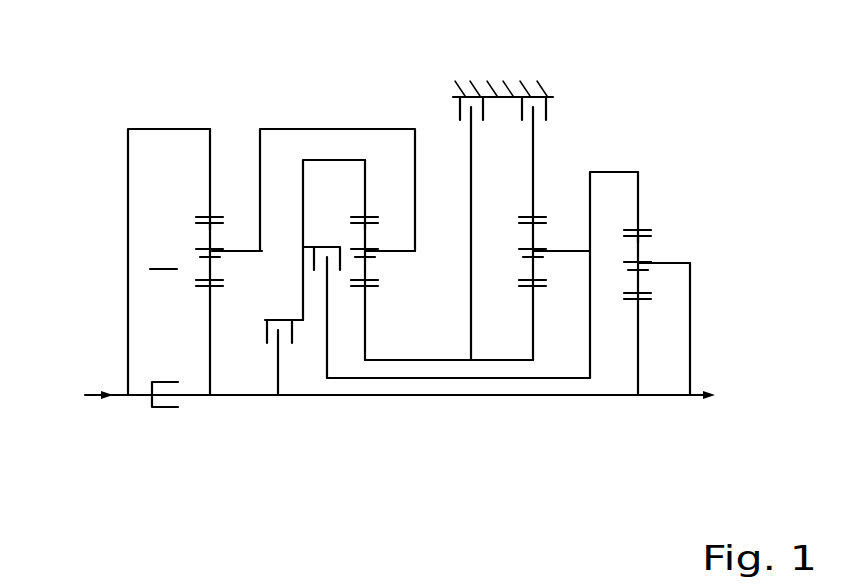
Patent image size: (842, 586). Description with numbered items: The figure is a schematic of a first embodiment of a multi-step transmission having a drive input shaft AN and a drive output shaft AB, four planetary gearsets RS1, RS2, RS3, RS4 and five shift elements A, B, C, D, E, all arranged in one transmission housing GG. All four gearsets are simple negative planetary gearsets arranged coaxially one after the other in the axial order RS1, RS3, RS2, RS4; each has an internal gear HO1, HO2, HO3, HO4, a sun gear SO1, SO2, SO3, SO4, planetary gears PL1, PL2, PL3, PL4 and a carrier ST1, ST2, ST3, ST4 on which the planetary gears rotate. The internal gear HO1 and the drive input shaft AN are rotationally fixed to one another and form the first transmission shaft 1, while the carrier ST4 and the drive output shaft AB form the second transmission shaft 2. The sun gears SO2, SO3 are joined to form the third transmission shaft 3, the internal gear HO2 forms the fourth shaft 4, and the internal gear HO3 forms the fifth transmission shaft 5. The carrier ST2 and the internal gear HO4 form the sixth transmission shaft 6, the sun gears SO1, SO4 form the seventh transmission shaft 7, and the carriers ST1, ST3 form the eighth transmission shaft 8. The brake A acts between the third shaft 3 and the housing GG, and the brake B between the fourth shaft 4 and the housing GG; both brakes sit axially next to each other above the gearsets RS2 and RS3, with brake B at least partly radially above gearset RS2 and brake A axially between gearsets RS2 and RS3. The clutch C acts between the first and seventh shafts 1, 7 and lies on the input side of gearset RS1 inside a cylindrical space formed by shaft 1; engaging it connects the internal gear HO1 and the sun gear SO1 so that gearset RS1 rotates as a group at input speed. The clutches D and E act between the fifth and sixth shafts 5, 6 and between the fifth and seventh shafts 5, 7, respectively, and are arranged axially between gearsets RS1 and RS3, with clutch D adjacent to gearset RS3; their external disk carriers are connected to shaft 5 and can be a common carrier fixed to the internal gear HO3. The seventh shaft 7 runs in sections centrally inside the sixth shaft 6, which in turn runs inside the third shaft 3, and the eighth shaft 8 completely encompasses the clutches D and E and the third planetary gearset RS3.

The first transmission shaft 1 is at (165, 128).
The second transmission shaft 2 is at (690, 368).
The third transmission shaft 3 is at (470, 168).
The fourth transmission shaft 4 is at (535, 182).
The fifth transmission shaft 5 is at (303, 197).
The sixth transmission shaft 6 is at (603, 172).
The seventh transmission shaft 7 is at (152, 490).
The eighth transmission shaft 8 is at (288, 128).
The internal gear of the first planetary gearset HO1 is at (212, 180).
The carrier of the first planetary gearset ST1 is at (252, 250).
The planetary gears of the first planetary gearset PL1 is at (197, 233).
The first planetary gearset RS1 is at (193, 255).
The sun gear of the first planetary gearset SO1 is at (208, 308).
The internal gear of the second planetary gearset HO2 is at (535, 162).
The carrier of the second planetary gearset ST2 is at (533, 252).
The planetary gears of the second planetary gearset PL2 is at (527, 233).
The second planetary gearset RS2 is at (510, 258).
The sun gear of the second planetary gearset SO2 is at (533, 323).
The internal gear of the third planetary gearset HO3 is at (367, 183).
The carrier of the third planetary gearset ST3 is at (395, 252).
The planetary gears of the third planetary gearset PL3 is at (370, 237).
The third planetary gearset RS3 is at (378, 268).
The sun gear of the third planetary gearset SO3 is at (364, 310).
The internal gear of the fourth planetary gearset HO4 is at (638, 193).
The carrier of the fourth planetary gearset ST4 is at (672, 264).
The planetary gears of the fourth planetary gearset PL4 is at (640, 256).
The fourth planetary gearset RS4 is at (652, 277).
The sun gear of the fourth planetary gearset SO4 is at (638, 323).
The transmission housing GG is at (540, 96).
The first shift element A is at (475, 83).
The second shift element B is at (537, 83).
The third shift element C is at (166, 374).
The fourth shift element D is at (323, 290).
The fifth shift element E is at (284, 336).
The drive input shaft AN is at (88, 395).
The drive output shaft AB is at (700, 398).